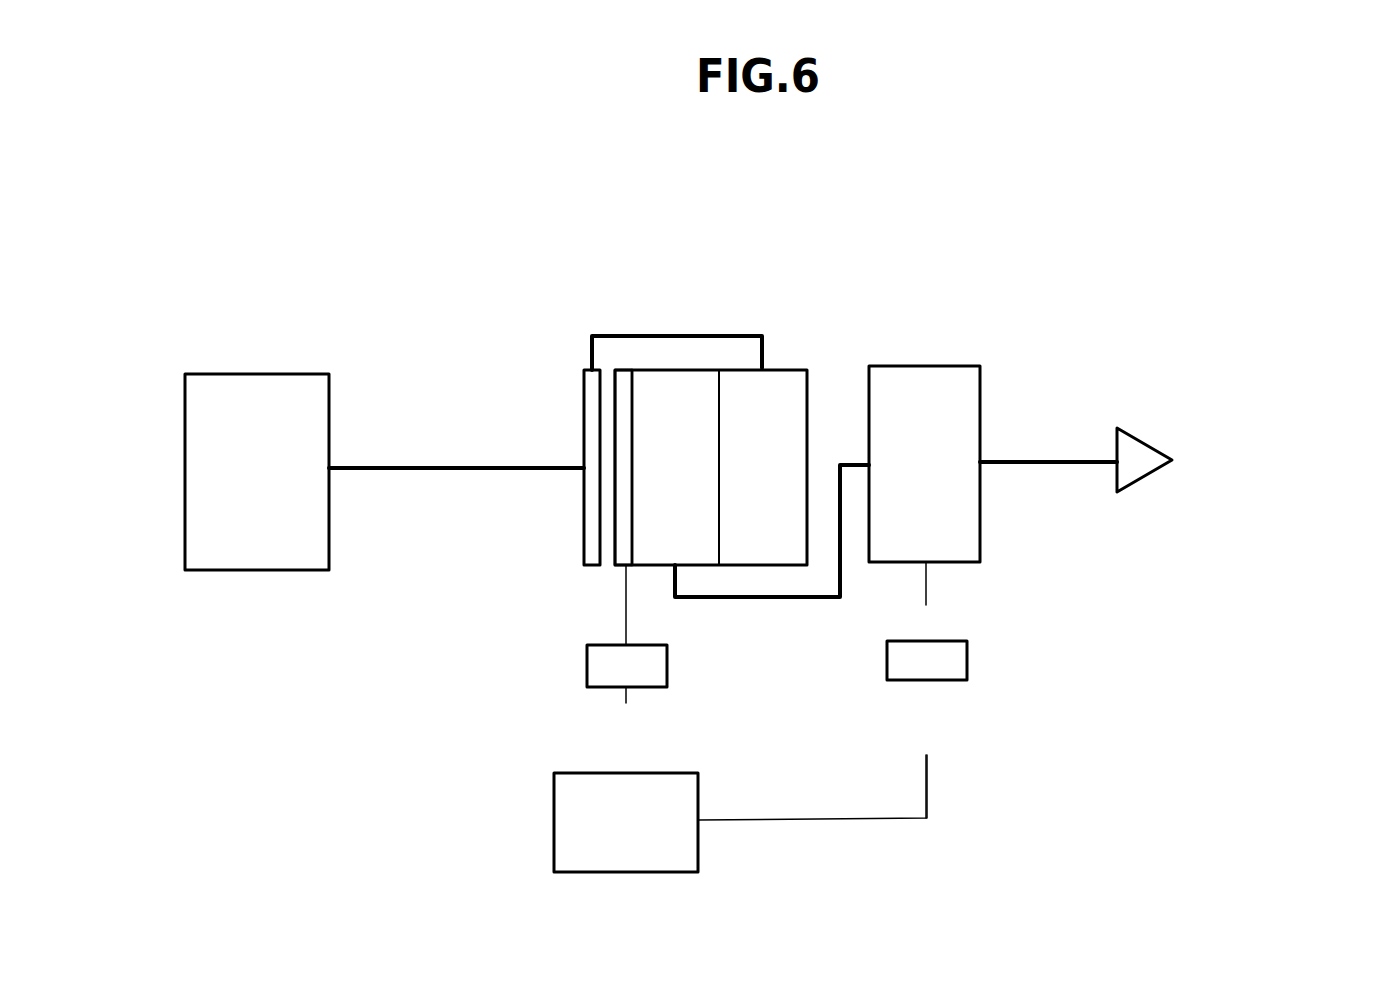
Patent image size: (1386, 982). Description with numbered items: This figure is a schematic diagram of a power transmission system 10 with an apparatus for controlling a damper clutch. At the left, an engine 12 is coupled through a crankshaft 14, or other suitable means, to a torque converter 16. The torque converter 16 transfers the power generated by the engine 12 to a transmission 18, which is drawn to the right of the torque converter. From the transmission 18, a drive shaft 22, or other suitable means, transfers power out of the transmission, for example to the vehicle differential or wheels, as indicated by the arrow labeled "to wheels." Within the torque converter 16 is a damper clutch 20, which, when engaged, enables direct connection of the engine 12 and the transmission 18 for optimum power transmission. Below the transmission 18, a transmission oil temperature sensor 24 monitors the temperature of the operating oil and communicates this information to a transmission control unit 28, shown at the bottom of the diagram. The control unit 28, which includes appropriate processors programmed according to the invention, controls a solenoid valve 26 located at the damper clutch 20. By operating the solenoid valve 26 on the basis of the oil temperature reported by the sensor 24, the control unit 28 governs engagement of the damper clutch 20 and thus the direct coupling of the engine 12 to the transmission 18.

The hybrid vehicle drive system 10 is at (378, 248).
The engine 12 is at (287, 374).
The crankshaft 14 is at (453, 468).
The torque converter 16 is at (807, 372).
The transmission 18 is at (955, 366).
The damper clutch 20 is at (620, 568).
The drive shaft 22 is at (1045, 455).
The transmission oil temperature sensor 24 is at (969, 658).
The solenoid valve 26 is at (669, 658).
The transmission control unit 28 is at (552, 793).